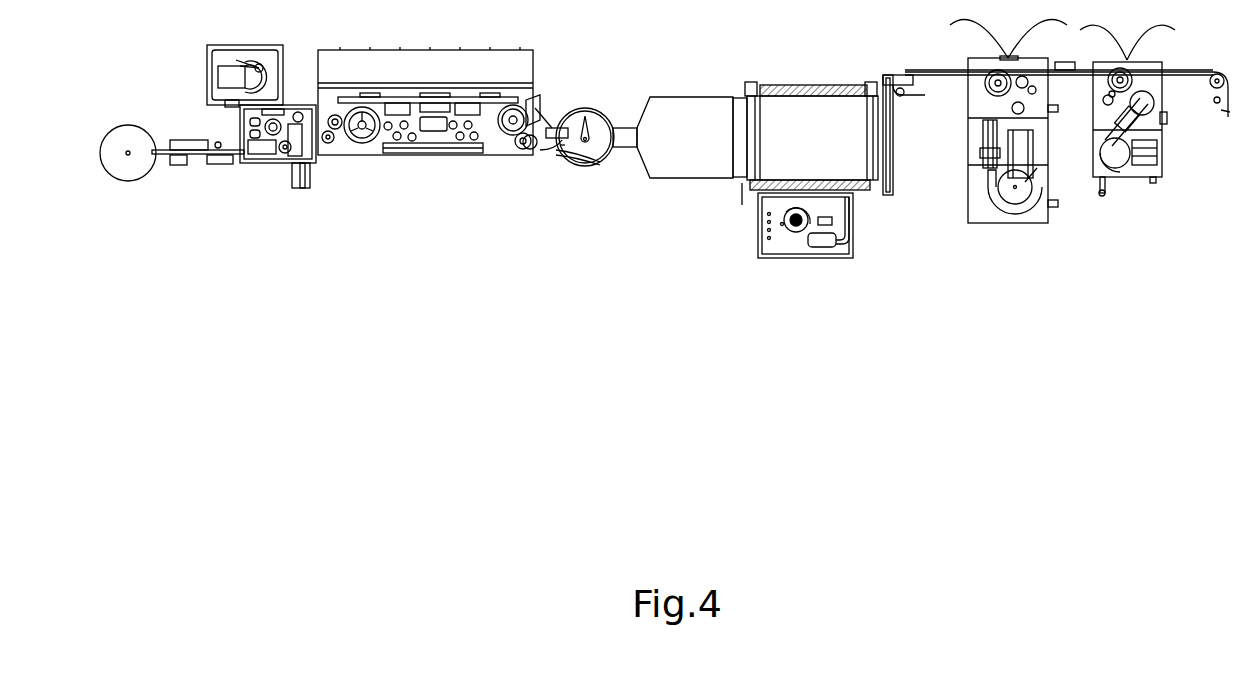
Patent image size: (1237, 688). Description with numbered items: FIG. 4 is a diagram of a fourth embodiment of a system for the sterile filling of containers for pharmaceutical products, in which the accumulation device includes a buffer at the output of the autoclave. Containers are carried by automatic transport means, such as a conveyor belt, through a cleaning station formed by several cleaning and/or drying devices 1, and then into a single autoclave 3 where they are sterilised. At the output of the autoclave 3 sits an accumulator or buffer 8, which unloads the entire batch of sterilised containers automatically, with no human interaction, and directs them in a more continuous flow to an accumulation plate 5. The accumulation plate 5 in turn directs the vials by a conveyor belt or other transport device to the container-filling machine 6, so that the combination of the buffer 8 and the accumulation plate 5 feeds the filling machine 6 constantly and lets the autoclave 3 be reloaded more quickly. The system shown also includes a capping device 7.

The cleaning and/or drying devices 1 is at (1075, 250).
The autoclave 3 is at (830, 152).
The accumulation plate 5 is at (583, 218).
The container-filling machine 6 is at (430, 218).
The capping device 7 is at (232, 218).
The buffer 8 is at (695, 165).